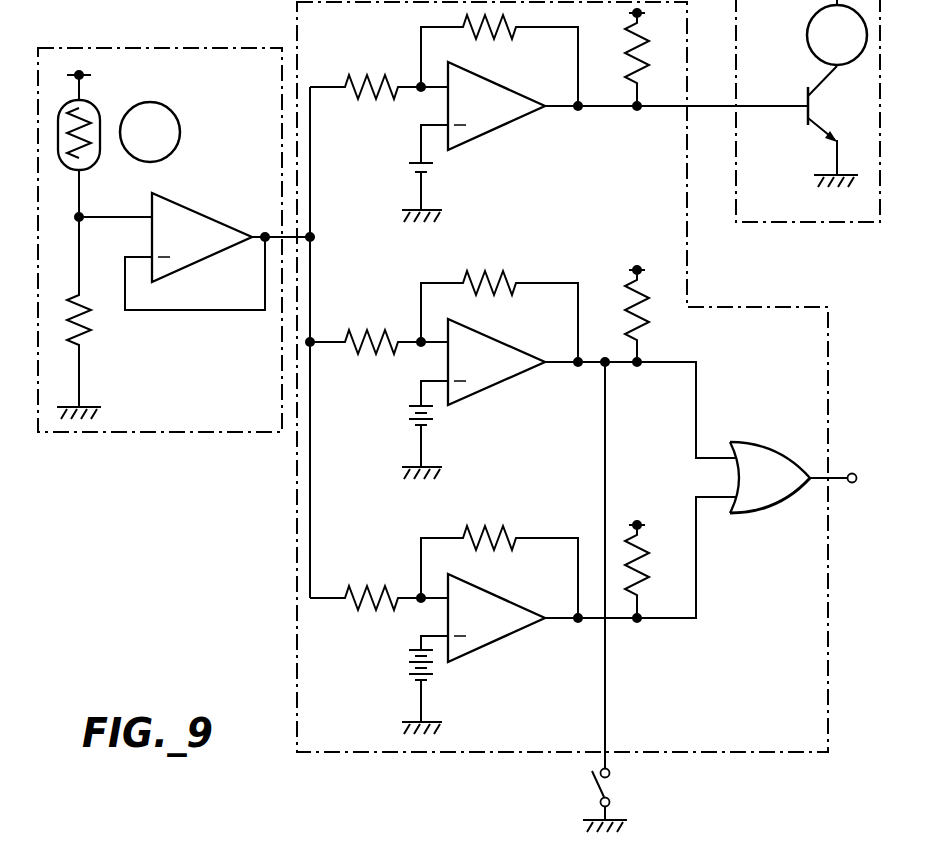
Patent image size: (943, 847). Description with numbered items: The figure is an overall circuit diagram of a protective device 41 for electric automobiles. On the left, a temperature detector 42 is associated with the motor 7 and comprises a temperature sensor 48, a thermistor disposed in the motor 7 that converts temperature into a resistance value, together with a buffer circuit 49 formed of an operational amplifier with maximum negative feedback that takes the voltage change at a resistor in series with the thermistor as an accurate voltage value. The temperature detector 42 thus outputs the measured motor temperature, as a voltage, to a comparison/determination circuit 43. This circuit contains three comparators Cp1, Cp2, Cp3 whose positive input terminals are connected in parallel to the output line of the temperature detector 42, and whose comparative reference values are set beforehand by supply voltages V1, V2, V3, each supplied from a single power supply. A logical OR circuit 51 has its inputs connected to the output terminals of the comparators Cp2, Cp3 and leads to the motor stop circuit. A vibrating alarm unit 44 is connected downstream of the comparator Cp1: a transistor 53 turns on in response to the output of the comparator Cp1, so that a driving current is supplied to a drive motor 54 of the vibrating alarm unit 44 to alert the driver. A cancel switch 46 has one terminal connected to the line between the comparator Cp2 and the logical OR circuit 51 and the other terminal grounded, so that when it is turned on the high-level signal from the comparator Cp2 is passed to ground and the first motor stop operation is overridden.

The protective device 41 is at (188, 549).
The temperature detector 42 is at (141, 434).
The comparison/determination circuit 43 is at (724, 307).
The vibrating alarm unit 44 is at (763, 225).
The temperature sensor 48 is at (93, 100).
The motor 7 is at (170, 106).
The buffer circuit 49 is at (186, 207).
The comparator Cp1 is at (490, 132).
The comparator Cp2 is at (490, 388).
The comparator Cp3 is at (490, 644).
The supply voltage V1 is at (425, 169).
The supply voltage V2 is at (425, 426).
The supply voltage V3 is at (425, 681).
The logical OR circuit 51 is at (786, 512).
The cancel switch 46 is at (592, 784).
The drive motor 54 is at (810, 47).
The transistor 53 is at (822, 88).